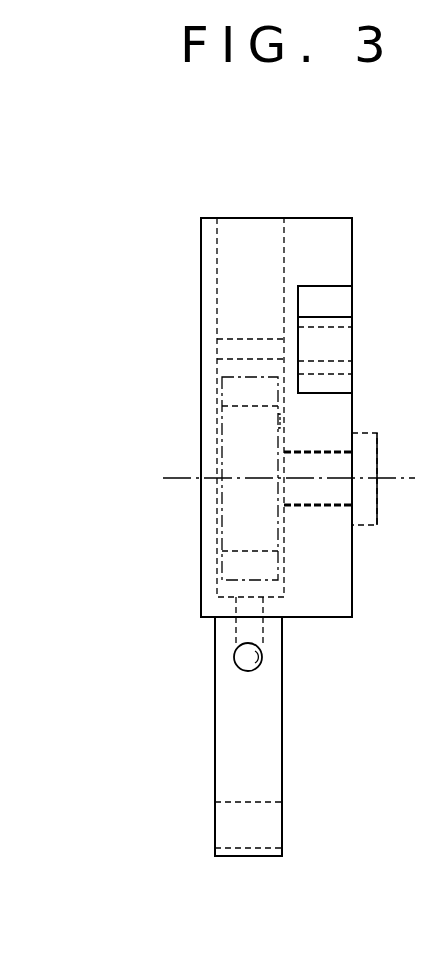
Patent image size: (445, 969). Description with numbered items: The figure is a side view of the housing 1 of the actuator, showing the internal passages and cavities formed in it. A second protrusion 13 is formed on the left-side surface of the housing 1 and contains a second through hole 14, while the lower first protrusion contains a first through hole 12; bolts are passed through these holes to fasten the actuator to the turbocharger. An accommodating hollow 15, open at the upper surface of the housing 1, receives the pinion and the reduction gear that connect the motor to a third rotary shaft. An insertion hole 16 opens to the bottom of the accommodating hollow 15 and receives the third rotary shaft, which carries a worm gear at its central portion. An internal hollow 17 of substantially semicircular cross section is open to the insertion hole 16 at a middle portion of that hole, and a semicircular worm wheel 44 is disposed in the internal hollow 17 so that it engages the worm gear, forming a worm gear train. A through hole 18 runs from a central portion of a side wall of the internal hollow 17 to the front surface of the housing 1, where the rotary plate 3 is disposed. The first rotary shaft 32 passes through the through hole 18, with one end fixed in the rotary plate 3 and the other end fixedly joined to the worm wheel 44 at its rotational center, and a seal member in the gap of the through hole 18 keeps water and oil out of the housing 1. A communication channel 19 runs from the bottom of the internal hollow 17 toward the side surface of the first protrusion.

The housing 1 is at (363, 776).
The rotary plate 3 is at (370, 526).
The first through hole 12 is at (263, 803).
The second protrusion 13 is at (330, 284).
The second through hole 14 is at (330, 328).
The accommodating hollow 15 is at (284, 240).
The insertion hole 16 is at (222, 390).
The internal hollow 17 is at (281, 425).
The through hole 18 is at (330, 457).
The communication channel 19 is at (262, 660).
The first rotary shaft 32 is at (297, 506).
The worm wheel 44 is at (278, 573).